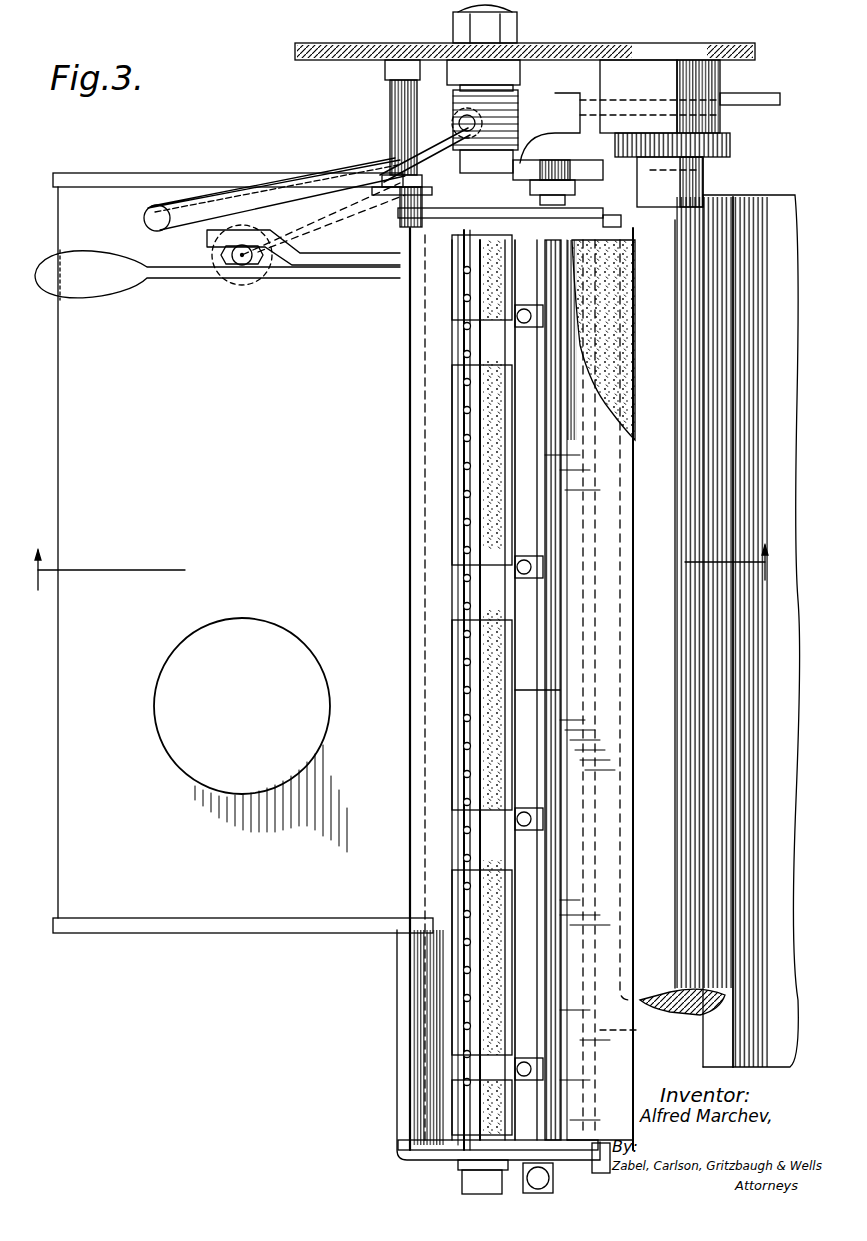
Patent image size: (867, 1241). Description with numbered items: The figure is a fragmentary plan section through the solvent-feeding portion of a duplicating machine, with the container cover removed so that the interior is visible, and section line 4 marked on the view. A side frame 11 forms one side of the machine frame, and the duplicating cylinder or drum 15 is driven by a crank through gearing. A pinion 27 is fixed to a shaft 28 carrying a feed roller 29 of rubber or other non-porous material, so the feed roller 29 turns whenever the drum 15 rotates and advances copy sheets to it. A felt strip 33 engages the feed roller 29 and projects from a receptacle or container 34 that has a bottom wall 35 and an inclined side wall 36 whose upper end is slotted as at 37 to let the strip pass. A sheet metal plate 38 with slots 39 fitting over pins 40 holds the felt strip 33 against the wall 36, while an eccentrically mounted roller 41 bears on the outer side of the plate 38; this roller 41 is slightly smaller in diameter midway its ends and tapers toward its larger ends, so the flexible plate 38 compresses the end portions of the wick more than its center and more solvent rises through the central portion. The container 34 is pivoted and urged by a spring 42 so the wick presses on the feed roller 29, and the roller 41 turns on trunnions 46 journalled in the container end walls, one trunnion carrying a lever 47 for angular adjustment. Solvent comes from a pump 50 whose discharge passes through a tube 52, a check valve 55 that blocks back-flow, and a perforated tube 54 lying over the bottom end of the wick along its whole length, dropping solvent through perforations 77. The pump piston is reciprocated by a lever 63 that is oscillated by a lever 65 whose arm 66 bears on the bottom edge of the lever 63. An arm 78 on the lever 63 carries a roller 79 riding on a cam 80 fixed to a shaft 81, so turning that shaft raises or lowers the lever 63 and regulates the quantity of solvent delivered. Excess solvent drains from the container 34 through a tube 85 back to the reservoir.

The section line 4- 4 is at (397, 567).
The side frame 11 is at (342, 46).
The duplicating cylinder or drum 15 is at (782, 195).
The pinion 27 is at (728, 150).
The shaft 28 is at (705, 193).
The feed roller 29 is at (705, 298).
The felt strip 33 is at (620, 330).
The receptacle or container 34 is at (400, 962).
The bottom wall 35 is at (422, 1039).
The inclined side wall 36 is at (625, 1032).
The slot 37 is at (596, 1140).
The sheet metal plate 38 is at (605, 908).
The slots 39 is at (498, 320).
The pins 40 is at (520, 320).
The eccentrically mounted roller 41 is at (540, 642).
The spring 42 is at (460, 112).
The trunnions 46 is at (548, 234).
The lever 47 is at (546, 1182).
The pump 50 is at (240, 272).
The tube 52 is at (312, 222).
The perforated tube 54 is at (460, 466).
The check valve 55 is at (462, 126).
The lever 63 is at (364, 276).
The lever 65 is at (775, 96).
The arm 66 is at (556, 105).
The perforations 77 is at (465, 626).
The arm 78 is at (322, 258).
The roller 79 is at (542, 170).
The cam 80 is at (592, 172).
The shaft 81 is at (600, 78).
The tube 85 is at (330, 185).